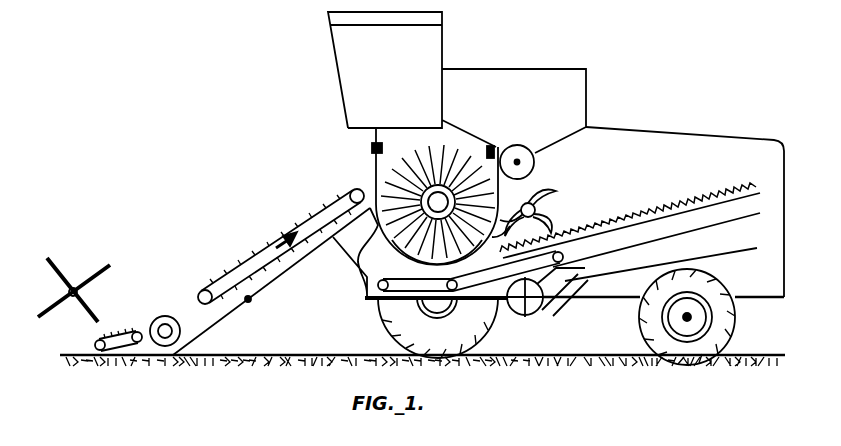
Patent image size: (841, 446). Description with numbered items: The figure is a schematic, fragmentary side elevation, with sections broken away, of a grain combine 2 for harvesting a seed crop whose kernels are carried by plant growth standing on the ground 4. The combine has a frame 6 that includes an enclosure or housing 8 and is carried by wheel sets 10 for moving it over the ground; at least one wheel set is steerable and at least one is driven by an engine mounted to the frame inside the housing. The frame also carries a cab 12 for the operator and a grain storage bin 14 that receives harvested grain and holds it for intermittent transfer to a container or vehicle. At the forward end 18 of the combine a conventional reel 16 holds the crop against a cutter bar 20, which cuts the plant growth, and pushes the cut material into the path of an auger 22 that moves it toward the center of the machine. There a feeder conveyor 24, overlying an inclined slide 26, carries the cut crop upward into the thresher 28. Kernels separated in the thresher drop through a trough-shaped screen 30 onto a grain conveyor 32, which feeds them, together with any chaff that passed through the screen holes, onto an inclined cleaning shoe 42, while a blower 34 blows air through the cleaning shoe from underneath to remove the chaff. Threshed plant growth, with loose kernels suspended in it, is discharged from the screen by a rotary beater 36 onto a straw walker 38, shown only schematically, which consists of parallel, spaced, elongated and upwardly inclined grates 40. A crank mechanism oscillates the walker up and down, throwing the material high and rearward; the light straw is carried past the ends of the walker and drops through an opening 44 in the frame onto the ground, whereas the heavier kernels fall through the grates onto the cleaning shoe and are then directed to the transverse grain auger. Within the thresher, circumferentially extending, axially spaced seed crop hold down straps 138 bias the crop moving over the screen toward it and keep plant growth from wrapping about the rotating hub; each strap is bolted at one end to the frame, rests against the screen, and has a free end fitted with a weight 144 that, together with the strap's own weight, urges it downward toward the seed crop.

The combine 2 is at (693, 76).
The ground 4 is at (745, 360).
The frame 6 is at (602, 300).
The housing 8 is at (697, 137).
The wheel sets 10 is at (734, 330).
The cab 12 is at (443, 44).
The grain storage bin 14 is at (577, 95).
The reel 16 is at (62, 270).
The forward end 18 is at (144, 186).
The cutter bar 20 is at (80, 348).
The auger 22 is at (156, 318).
The feeder conveyor 24 is at (222, 278).
The inclined slide 26 is at (250, 299).
The thresher 28 is at (401, 121).
The trough-shaped screen 30 is at (354, 272).
The grain conveyor 32 is at (372, 306).
The blower 34 is at (548, 312).
The rotary beater 36 is at (540, 200).
The straw walker 38 is at (630, 216).
The grates 40 is at (670, 203).
The cleaning shoe 42 is at (658, 239).
The opening 44 is at (752, 298).
The seed crop hold down straps 138 is at (375, 167).
The weight 144 is at (492, 148).